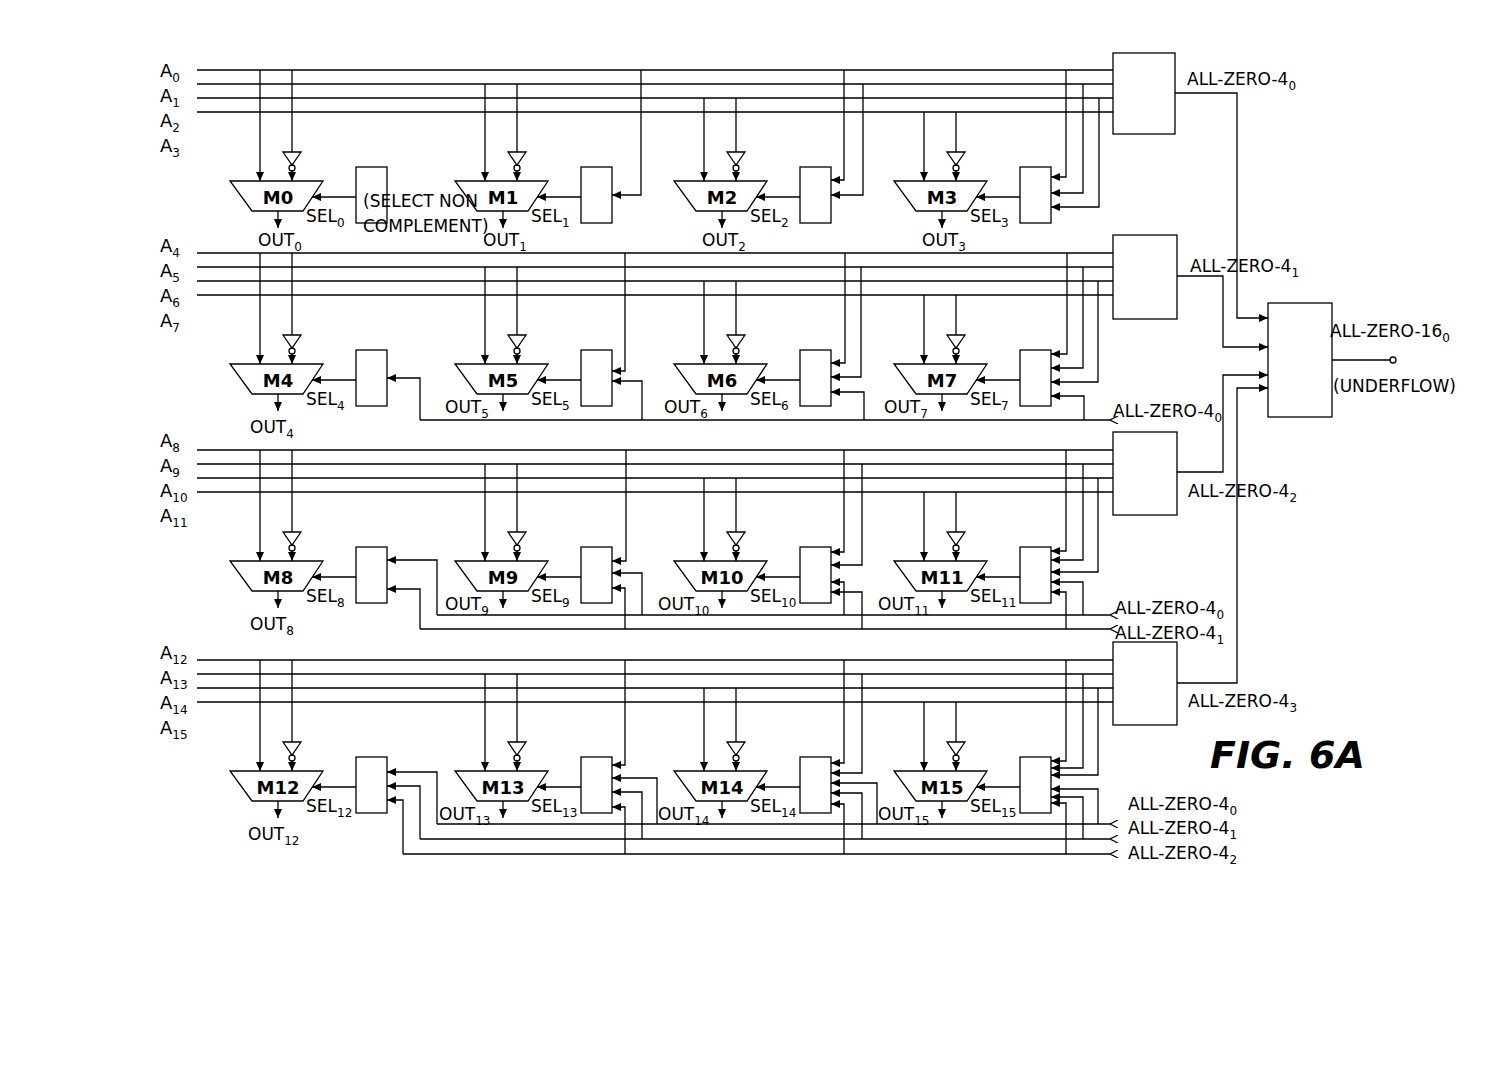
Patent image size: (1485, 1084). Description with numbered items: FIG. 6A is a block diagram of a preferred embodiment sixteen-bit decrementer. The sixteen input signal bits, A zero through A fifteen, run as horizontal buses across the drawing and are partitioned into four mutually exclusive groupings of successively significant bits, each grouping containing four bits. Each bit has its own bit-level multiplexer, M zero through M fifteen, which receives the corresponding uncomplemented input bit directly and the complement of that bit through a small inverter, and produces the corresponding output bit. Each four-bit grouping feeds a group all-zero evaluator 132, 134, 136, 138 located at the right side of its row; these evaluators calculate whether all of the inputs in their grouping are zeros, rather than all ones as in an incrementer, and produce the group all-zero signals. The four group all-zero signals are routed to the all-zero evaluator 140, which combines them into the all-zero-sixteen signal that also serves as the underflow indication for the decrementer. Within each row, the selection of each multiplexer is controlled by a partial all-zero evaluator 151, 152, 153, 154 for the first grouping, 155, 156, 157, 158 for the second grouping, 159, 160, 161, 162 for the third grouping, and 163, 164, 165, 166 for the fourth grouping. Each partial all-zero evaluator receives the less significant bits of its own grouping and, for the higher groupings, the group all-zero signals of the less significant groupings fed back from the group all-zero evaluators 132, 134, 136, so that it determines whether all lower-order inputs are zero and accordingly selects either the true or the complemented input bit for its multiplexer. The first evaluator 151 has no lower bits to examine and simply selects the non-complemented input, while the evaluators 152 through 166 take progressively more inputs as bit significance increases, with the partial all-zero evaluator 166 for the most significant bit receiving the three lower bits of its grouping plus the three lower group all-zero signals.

The group all-zero evaluator 132 is at (1144, 93).
The group all-zero evaluator 134 is at (1145, 277).
The group all-zero evaluator 136 is at (1145, 473).
The group all-zero evaluator 138 is at (1145, 683).
The all-zero evaluator 140 is at (1300, 360).
The partial all-zero evaluator 151 is at (350, 177).
The partial all-zero evaluator 152 is at (575, 177).
The partial all-zero evaluator 153 is at (794, 177).
The partial all-zero evaluator 154 is at (1014, 177).
The partial all-zero evaluator 155 is at (350, 360).
The partial all-zero evaluator 156 is at (575, 360).
The partial all-zero evaluator 157 is at (794, 360).
The partial all-zero evaluator 158 is at (1014, 360).
The partial all-zero evaluator 159 is at (350, 557).
The partial all-zero evaluator 160 is at (575, 557).
The partial all-zero evaluator 161 is at (794, 557).
The partial all-zero evaluator 162 is at (1014, 557).
The partial all-zero evaluator 163 is at (350, 767).
The partial all-zero evaluator 164 is at (575, 767).
The partial all-zero evaluator 165 is at (794, 767).
The partial all-zero evaluator 166 is at (1014, 767).